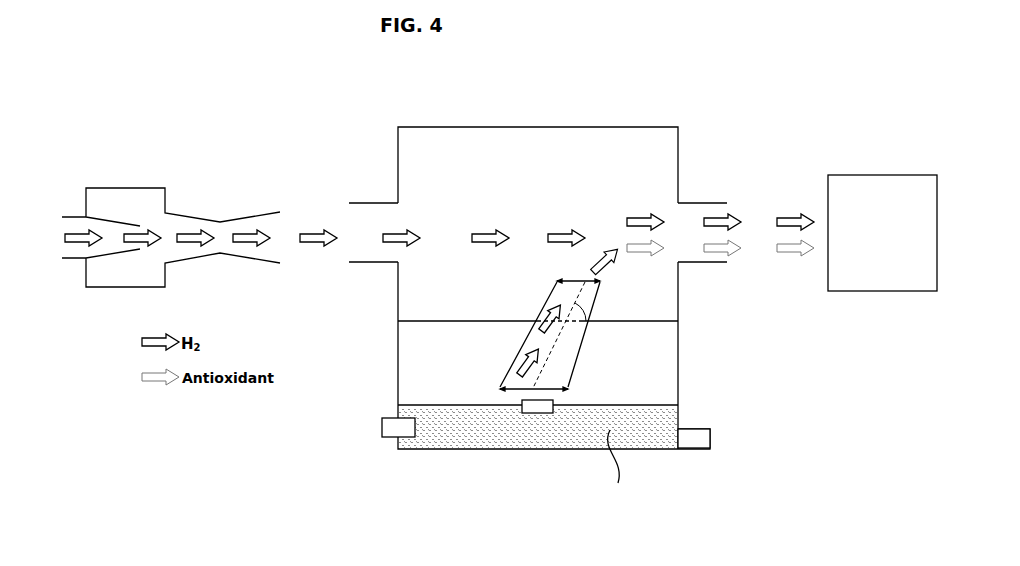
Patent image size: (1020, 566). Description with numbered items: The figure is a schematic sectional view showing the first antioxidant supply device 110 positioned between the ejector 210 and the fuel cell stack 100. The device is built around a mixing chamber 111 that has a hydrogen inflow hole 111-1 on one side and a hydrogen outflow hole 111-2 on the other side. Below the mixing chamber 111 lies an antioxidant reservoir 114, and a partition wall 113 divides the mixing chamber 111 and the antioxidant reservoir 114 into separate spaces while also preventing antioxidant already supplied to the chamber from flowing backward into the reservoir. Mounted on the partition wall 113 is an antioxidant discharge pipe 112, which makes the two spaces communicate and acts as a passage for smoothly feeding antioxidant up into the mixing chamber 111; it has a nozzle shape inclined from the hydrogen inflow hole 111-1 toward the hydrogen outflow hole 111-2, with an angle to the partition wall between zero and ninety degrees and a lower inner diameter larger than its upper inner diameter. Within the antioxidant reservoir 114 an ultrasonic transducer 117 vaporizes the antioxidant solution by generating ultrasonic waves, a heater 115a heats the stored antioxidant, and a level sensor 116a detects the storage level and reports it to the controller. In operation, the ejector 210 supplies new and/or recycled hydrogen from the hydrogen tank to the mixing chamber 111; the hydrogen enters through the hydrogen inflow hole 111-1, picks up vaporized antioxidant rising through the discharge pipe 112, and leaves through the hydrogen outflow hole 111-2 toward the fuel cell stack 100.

The fuel cell stack 100 is at (878, 175).
The first antioxidant supply device 110 is at (532, 288).
The mixing chamber 111 is at (427, 127).
The hydrogen inflow hole 111-1 is at (375, 215).
The hydrogen outflow hole 111-2 is at (693, 210).
The antioxidant discharge pipe 112 is at (587, 337).
The partition wall 113 is at (425, 318).
The antioxidant reservoir 114 is at (678, 368).
The heater 115a is at (385, 429).
The level sensor 116a is at (703, 428).
The ultrasonic transducer 117 is at (550, 402).
The ejector 210 is at (142, 188).